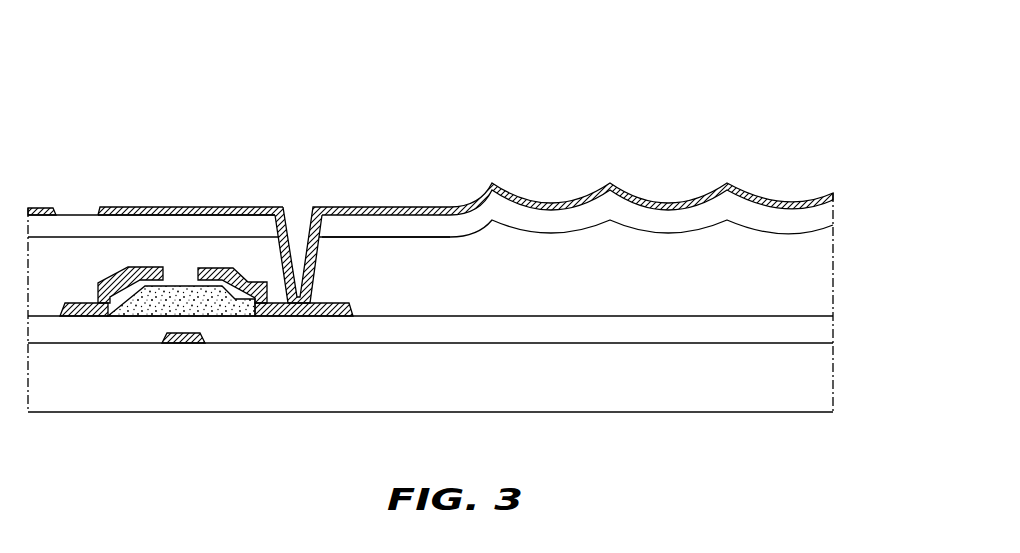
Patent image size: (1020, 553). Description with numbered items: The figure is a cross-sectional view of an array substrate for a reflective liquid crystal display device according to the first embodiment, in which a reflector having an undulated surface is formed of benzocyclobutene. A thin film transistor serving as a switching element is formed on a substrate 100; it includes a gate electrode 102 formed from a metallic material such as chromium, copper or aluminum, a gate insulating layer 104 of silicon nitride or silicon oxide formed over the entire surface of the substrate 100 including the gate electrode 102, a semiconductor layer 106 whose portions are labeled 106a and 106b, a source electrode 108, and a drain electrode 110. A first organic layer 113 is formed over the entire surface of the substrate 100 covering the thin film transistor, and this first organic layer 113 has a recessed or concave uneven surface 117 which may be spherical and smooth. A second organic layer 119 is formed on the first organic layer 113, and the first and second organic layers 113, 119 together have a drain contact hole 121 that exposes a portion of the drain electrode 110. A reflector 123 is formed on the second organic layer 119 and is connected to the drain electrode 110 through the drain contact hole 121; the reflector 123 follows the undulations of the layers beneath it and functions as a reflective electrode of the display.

The substrate 100 is at (815, 378).
The gate electrode 102 is at (185, 343).
The gate insulating layer 104 is at (815, 332).
The semiconductor layer 106 is at (182, 216).
The active layer 106a is at (188, 292).
The source/drain electrodes 106b is at (135, 267).
The source electrode 108 is at (63, 303).
The drain electrode 110 is at (300, 310).
The first organic layer 113 is at (402, 253).
The uneven surface 117 is at (588, 226).
The second organic layer 119 is at (533, 228).
The drain contact hole 121 is at (297, 204).
The reflector 123 is at (665, 205).